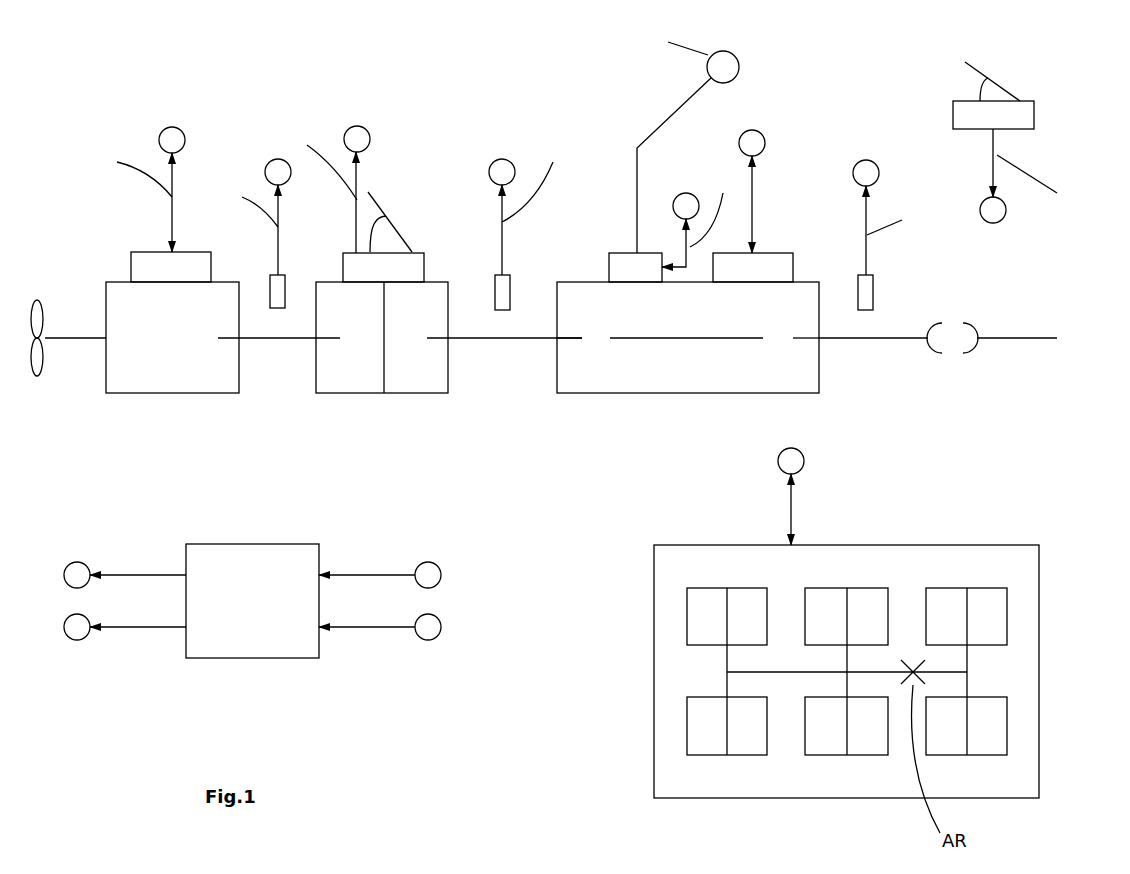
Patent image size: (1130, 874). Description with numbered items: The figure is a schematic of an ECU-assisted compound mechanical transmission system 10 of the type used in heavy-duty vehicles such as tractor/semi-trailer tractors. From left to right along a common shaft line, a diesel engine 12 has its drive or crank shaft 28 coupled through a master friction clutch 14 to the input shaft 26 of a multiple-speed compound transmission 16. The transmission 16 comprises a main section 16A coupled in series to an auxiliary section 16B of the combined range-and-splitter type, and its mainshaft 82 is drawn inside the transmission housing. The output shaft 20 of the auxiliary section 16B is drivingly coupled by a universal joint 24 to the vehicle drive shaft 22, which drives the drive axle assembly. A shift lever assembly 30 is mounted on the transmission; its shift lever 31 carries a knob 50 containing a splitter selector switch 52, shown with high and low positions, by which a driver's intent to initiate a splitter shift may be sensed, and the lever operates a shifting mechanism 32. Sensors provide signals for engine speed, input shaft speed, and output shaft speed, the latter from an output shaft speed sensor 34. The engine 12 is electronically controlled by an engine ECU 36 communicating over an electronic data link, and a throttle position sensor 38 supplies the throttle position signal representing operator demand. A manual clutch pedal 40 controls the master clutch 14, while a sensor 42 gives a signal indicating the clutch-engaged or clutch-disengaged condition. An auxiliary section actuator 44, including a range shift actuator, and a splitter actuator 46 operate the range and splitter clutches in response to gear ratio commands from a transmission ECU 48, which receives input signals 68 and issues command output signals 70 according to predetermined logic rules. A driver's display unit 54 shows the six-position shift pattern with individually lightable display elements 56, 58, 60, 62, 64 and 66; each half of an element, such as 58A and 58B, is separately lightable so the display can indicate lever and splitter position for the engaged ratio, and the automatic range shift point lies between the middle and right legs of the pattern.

The vehicular transmission system 10 is at (530, 118).
The engine 12 is at (168, 357).
The master friction clutch 14 is at (368, 412).
The compound transmission 16 is at (702, 358).
The main section 16A is at (625, 380).
The auxiliary section 16B is at (800, 363).
The output shaft 20 is at (898, 337).
The drive shaft 22 is at (1023, 342).
The universal joint 24 is at (955, 320).
The input shaft 26 is at (493, 338).
The crank shaft 28 is at (277, 340).
The shift lever assembly 30 is at (662, 163).
The shift lever 31 is at (278, 292).
The input shaft speed sensor 32 is at (502, 292).
The output shaft speed sensor 34 is at (863, 293).
The engine ECU 36 is at (137, 265).
The throttle position sensor 38 is at (972, 122).
The clutch pedal 40 is at (380, 203).
The clutch sensor 42 is at (420, 265).
The auxiliary section actuator 44 is at (723, 270).
The splitter actuator 46 is at (765, 272).
The transmission ECU 48 is at (237, 637).
The knob 50 is at (728, 72).
The splitter selector switch 52 is at (688, 47).
The display unit 54 is at (970, 515).
The display element 56 is at (708, 588).
The display element 58 is at (737, 755).
The display element half 58A is at (708, 752).
The display element half 58B is at (750, 747).
The display element 60 is at (867, 588).
The display element 62 is at (860, 755).
The display element 64 is at (985, 588).
The display element 66 is at (967, 755).
The input signals 68 is at (375, 645).
The command output signals 70 is at (135, 643).
The mainshaft 82 is at (722, 340).